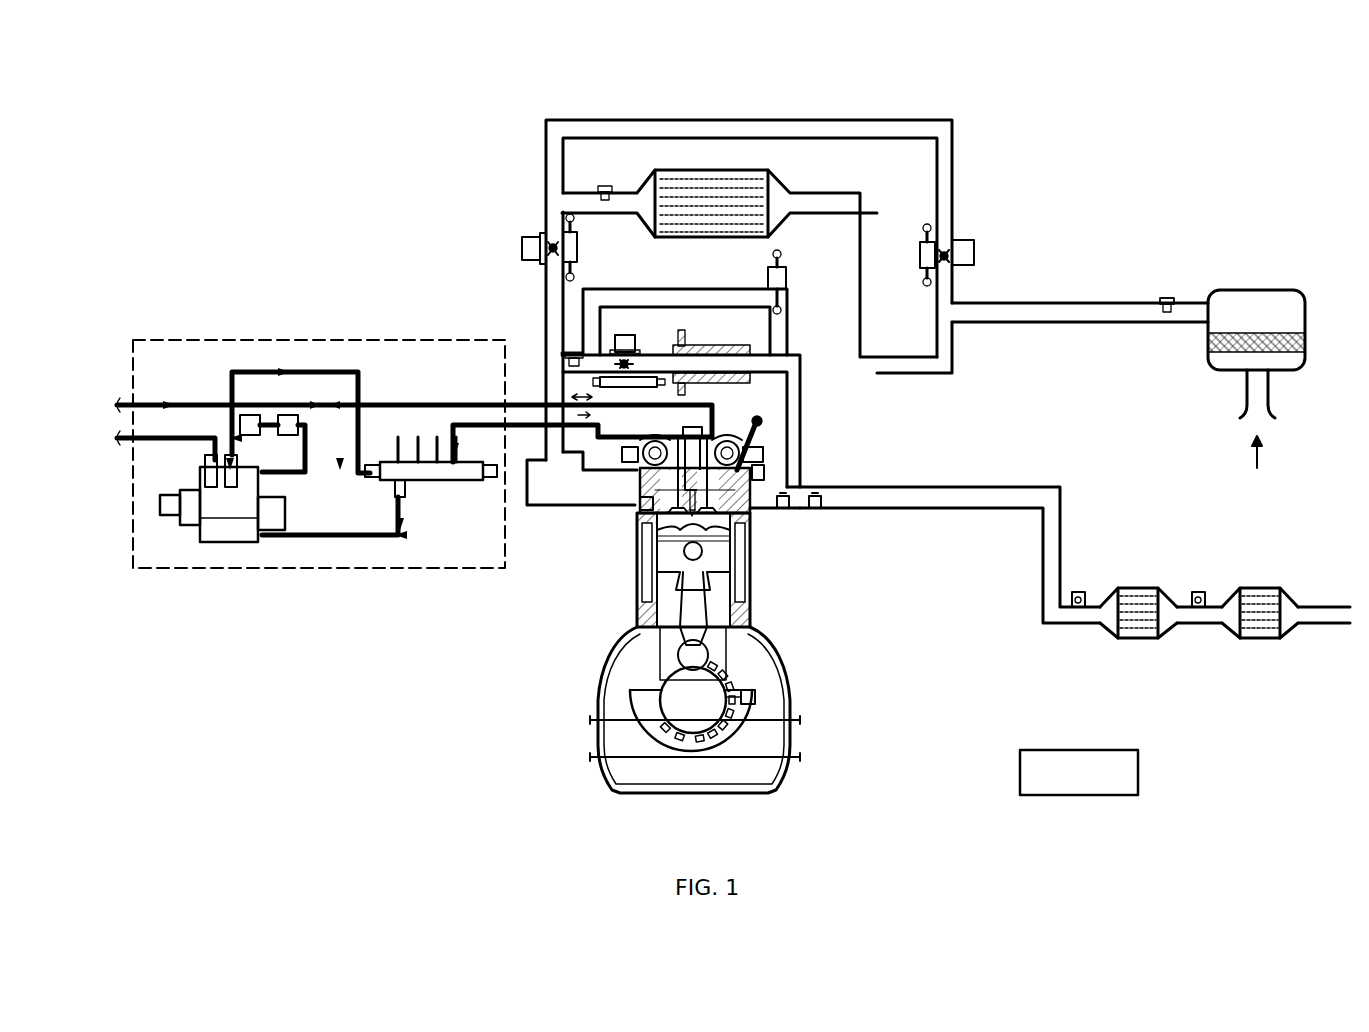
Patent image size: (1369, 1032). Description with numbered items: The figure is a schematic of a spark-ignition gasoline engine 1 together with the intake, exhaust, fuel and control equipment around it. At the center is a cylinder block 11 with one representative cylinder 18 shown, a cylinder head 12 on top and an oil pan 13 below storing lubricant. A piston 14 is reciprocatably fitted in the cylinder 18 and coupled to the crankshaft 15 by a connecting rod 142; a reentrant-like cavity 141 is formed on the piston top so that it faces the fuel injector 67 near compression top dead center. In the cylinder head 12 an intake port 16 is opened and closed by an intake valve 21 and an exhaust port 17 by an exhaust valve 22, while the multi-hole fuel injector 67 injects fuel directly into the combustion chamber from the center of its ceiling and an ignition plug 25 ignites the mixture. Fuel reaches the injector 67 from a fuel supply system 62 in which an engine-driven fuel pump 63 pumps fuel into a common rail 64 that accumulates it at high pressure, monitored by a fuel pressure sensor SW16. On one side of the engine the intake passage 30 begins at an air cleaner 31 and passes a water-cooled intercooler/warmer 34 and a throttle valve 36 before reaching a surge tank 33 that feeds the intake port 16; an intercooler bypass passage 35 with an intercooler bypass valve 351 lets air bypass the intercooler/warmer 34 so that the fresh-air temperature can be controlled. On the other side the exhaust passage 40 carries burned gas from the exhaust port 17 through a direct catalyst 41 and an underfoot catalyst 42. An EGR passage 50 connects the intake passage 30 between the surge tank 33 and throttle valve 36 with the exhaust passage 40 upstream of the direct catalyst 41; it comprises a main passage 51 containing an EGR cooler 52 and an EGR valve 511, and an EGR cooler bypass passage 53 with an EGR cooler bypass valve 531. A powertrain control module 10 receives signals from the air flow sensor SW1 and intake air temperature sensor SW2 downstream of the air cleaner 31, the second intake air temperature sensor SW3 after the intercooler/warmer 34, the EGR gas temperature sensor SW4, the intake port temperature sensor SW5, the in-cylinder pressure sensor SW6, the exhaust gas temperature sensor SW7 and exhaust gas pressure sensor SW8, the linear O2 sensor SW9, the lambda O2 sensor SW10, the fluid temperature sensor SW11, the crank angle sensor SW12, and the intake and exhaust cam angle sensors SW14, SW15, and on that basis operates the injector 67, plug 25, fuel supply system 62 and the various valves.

The engine 1 is at (1095, 166).
The powertrain control module 10 is at (1138, 770).
The cylinder block 11 is at (750, 620).
The cylinder head 12 is at (745, 513).
The oil pan 13 is at (782, 776).
The piston 14 is at (650, 585).
The cavity 141 is at (745, 590).
The connecting rod 142 is at (660, 672).
The crankshaft 15 is at (695, 705).
The intake port 16 is at (630, 501).
The exhaust port 17 is at (757, 509).
The cylinder 18 is at (660, 612).
The intake valve 21 is at (668, 516).
The exhaust valve 22 is at (735, 518).
The ignition plug 25 is at (762, 432).
The intake passage 30 is at (535, 262).
The air cleaner 31 is at (1270, 292).
The surge tank 33 is at (560, 498).
The intercooler/warmer 34 is at (755, 167).
The intercooler bypass passage 35 is at (915, 118).
The intercooler bypass valve 351 is at (975, 240).
The throttle valve 36 is at (535, 236).
The exhaust passage 40 is at (960, 487).
The direct catalyst 41 is at (1142, 588).
The underfoot catalyst 42 is at (1262, 588).
The EGR passage 50 is at (728, 421).
The main passage 51 is at (790, 378).
The EGR valve 511 is at (622, 350).
The EGR cooler 52 is at (725, 345).
The EGR cooler bypass passage 53 is at (680, 290).
The EGR cooler bypass valve 531 is at (786, 282).
The fuel supply system 62 is at (240, 338).
The fuel pump 63 is at (232, 542).
The common rail 64 is at (440, 482).
The fuel injector 67 is at (697, 428).
The air flow sensor SW1 is at (1167, 299).
The intake air temperature sensor SW2 is at (1167, 301).
The second intake air temperature sensor SW3 is at (605, 186).
The EGR gas temperature sensor SW4 is at (565, 355).
The intake port temperature sensor SW5 is at (645, 512).
The in-cylinder pressure sensor SW6 is at (676, 432).
The exhaust gas temperature sensor SW7 is at (783, 508).
The exhaust gas pressure sensor SW8 is at (815, 508).
The linear O2 sensor SW9 is at (1080, 592).
The lambda O2 sensor SW10 is at (1198, 592).
The fluid temperature sensor SW11 is at (770, 470).
The crank angle sensor SW12 is at (757, 697).
The intake cam angle sensor SW14 is at (625, 462).
The exhaust cam angle sensor SW15 is at (770, 452).
The fuel pressure sensor SW16 is at (490, 495).